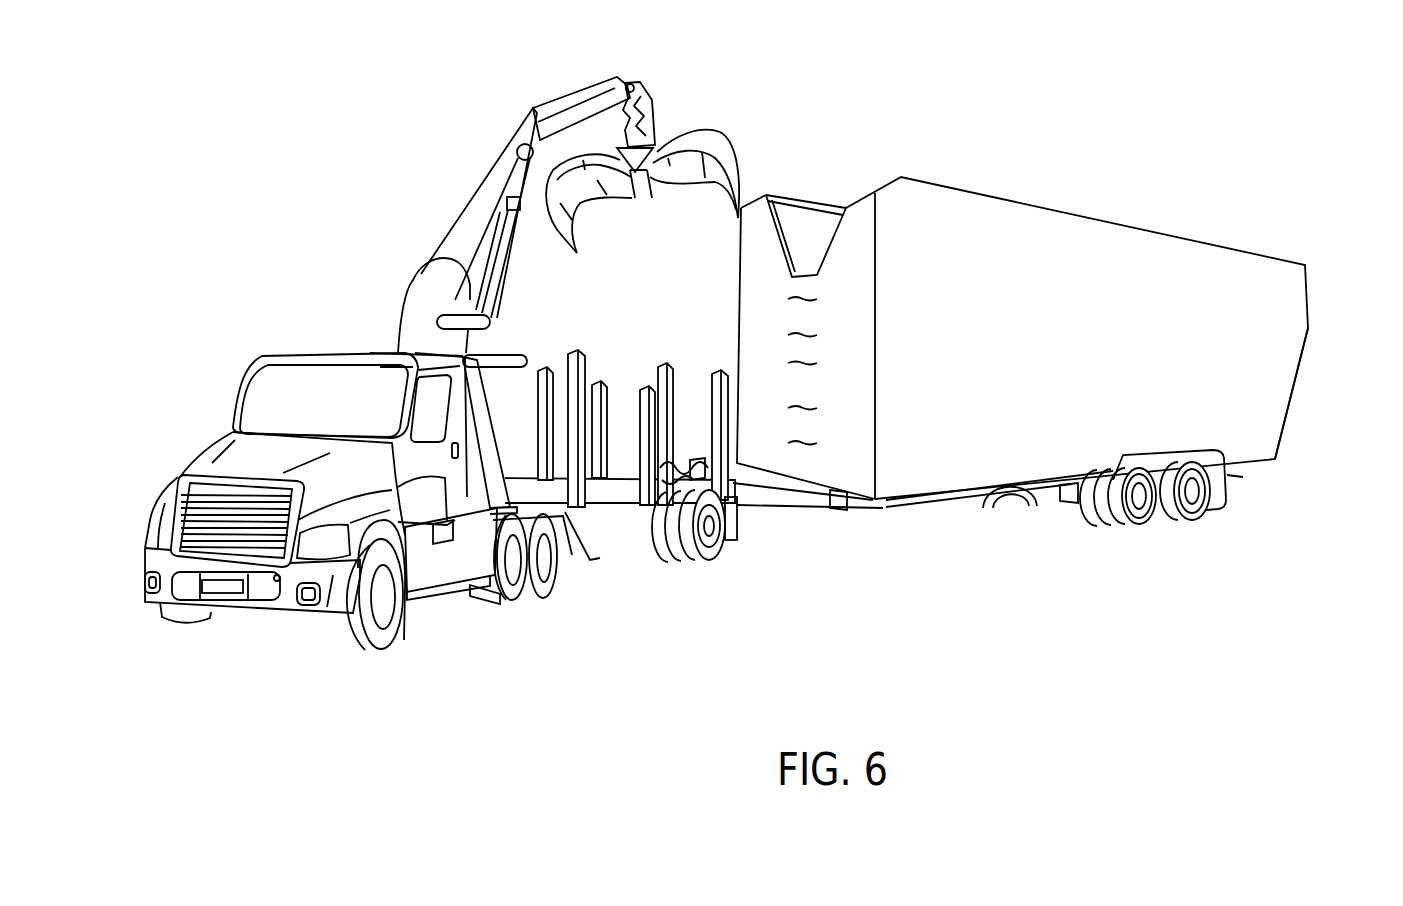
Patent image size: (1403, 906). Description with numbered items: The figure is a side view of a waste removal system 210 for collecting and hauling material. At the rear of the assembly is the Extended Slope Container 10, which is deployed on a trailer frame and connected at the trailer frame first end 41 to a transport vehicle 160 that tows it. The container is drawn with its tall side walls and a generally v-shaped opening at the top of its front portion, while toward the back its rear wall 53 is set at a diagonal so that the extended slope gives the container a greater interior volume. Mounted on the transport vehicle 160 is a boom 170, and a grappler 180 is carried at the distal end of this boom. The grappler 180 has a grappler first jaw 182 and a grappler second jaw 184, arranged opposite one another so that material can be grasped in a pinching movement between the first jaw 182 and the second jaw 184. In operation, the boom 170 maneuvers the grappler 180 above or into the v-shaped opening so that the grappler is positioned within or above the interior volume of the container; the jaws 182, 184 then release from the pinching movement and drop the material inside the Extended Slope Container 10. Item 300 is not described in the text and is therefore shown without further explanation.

The Extended Slope Container 10 is at (1046, 304).
The trailer frame first end 41 is at (763, 527).
The rear wall 53 is at (1295, 430).
The transport vehicle 160 is at (230, 378).
The boom 170 is at (475, 185).
The grappler 180 is at (658, 189).
The grappler first jaw 182 is at (597, 257).
The grappler second jaw 184 is at (725, 220).
The waste removal system 210 is at (694, 529).
The guide bar 300 is at (813, 220).